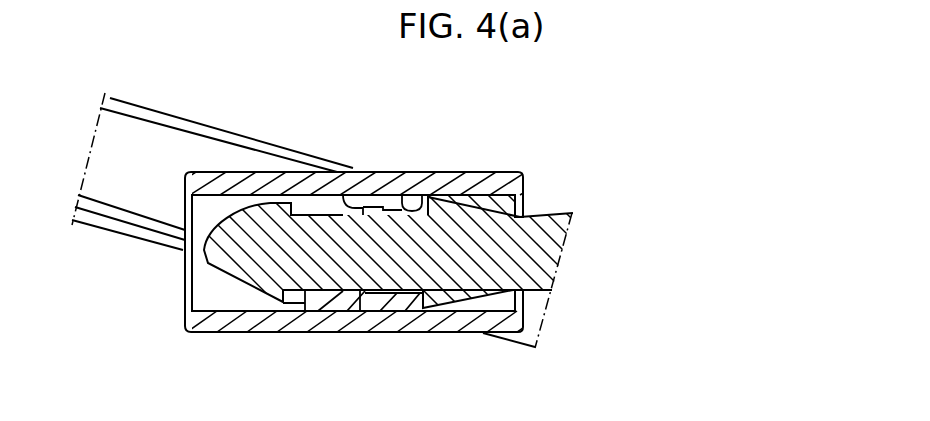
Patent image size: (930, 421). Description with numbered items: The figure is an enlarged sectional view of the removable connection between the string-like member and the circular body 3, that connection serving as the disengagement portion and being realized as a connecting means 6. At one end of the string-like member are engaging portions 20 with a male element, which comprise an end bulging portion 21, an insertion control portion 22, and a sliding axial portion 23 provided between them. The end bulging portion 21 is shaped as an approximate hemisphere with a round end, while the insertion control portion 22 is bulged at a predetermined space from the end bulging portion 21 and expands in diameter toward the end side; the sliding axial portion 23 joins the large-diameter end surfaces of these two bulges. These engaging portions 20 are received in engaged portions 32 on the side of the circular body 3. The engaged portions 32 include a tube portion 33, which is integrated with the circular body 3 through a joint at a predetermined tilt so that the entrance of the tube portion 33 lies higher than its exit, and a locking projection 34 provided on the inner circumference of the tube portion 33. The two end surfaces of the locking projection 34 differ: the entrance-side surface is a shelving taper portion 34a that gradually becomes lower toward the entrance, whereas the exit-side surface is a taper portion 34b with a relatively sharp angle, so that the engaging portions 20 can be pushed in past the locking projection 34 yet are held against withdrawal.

The circular body 3 is at (171, 100).
The connecting means 6 is at (495, 162).
The engaging portions 20 is at (379, 295).
The end bulging portion 21 is at (208, 265).
The insertion control portion 22 is at (487, 333).
The sliding axial portion 23 is at (300, 308).
The engaged portions 32 is at (427, 346).
The tube portion 33 is at (440, 313).
The locking projection 34 is at (348, 297).
The shelving taper portion 34a is at (413, 203).
The taper portion 34b is at (347, 197).